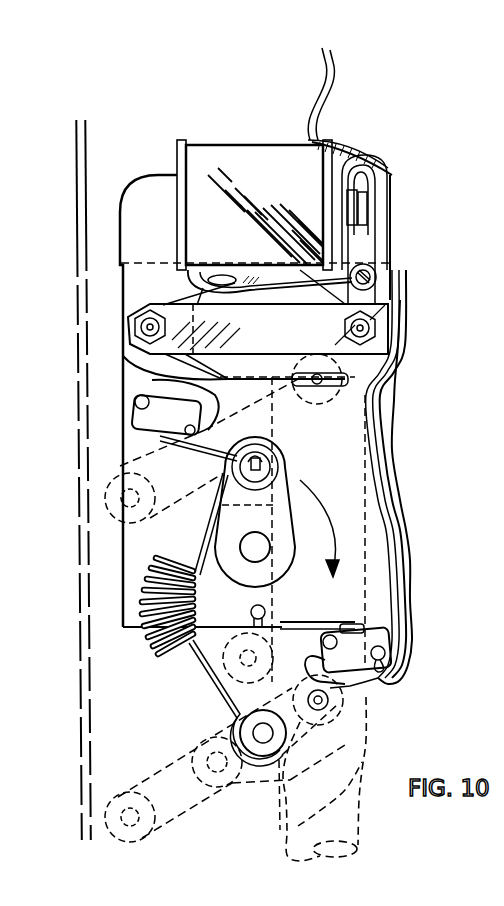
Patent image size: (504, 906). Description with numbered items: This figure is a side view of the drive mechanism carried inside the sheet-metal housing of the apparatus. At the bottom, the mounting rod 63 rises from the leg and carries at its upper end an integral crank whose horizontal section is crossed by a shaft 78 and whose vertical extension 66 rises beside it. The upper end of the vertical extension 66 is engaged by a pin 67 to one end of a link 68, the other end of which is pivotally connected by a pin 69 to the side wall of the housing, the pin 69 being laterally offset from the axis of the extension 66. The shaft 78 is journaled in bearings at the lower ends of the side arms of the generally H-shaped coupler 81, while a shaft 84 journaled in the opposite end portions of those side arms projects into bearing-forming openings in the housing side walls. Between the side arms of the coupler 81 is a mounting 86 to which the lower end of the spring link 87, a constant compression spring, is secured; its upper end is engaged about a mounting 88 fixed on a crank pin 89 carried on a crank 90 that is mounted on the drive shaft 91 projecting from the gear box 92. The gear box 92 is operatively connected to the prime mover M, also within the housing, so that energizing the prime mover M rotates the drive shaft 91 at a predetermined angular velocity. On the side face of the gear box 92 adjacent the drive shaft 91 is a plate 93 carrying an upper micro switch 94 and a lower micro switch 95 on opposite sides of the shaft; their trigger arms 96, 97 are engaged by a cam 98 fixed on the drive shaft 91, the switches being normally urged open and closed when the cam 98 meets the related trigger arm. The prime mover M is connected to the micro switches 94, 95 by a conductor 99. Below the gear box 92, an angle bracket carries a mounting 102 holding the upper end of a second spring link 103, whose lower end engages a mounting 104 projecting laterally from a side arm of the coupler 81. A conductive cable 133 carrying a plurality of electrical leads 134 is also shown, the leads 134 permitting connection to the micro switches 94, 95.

The prime mover M is at (213, 138).
The electrical leads 134 is at (338, 80).
The conductive cable 133 is at (360, 138).
The conductor 99 is at (392, 325).
The pin 67 is at (320, 386).
The vertical extension 66 is at (372, 500).
The plate 93 is at (380, 548).
The upper micro switch 94 is at (135, 410).
The trigger arm 96 is at (160, 438).
The link 68 is at (120, 463).
The pin 69 is at (130, 498).
The gear box 92 is at (123, 548).
The spring link 87 is at (148, 600).
The crank pin 89 is at (266, 460).
The mounting 88 is at (279, 471).
The cam 98 is at (285, 490).
The crank 90 is at (303, 503).
The drive shaft 91 is at (263, 550).
The trigger arm 97 is at (352, 622).
The lower micro switch 95 is at (385, 637).
The mounting 86 is at (244, 722).
The mounting 102 is at (242, 665).
The mounting 104 is at (202, 752).
The coupler 81 is at (128, 789).
The shaft 84 is at (128, 815).
The shaft 78 is at (330, 700).
The spring link 103 is at (370, 722).
The mounting rod 63 is at (358, 822).